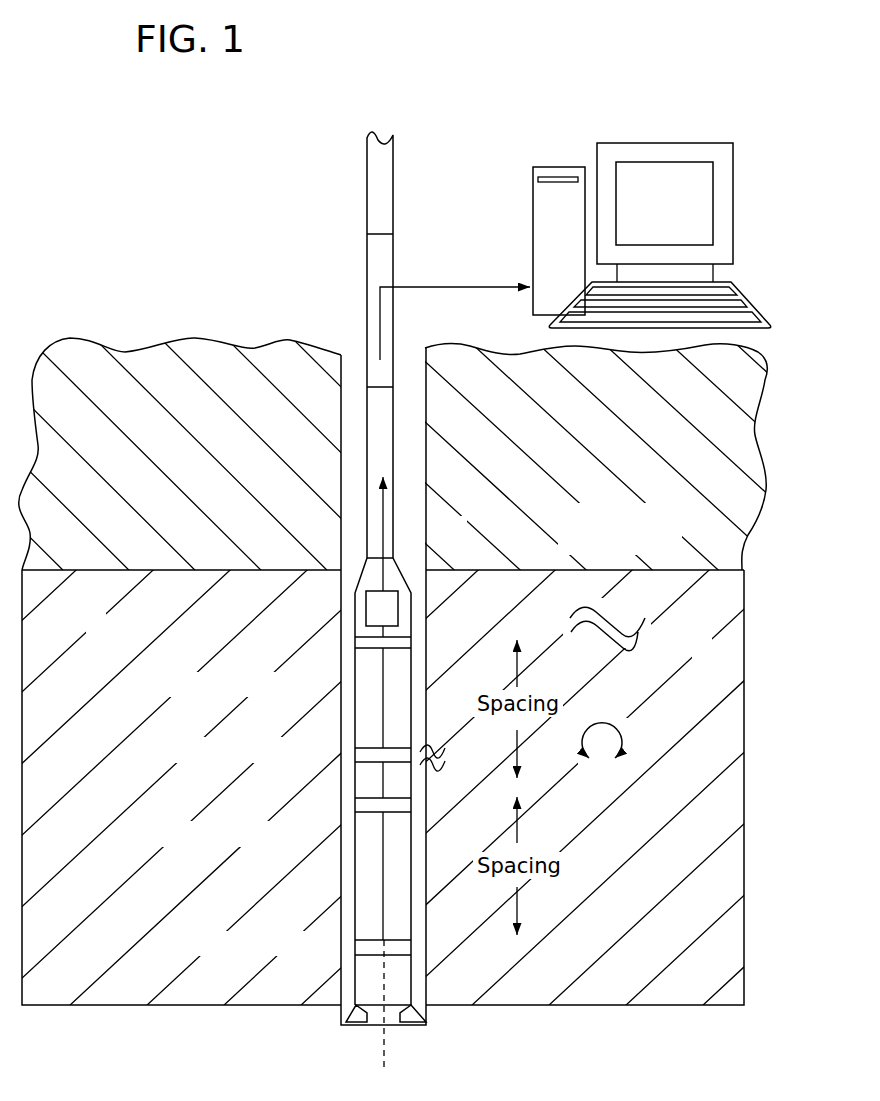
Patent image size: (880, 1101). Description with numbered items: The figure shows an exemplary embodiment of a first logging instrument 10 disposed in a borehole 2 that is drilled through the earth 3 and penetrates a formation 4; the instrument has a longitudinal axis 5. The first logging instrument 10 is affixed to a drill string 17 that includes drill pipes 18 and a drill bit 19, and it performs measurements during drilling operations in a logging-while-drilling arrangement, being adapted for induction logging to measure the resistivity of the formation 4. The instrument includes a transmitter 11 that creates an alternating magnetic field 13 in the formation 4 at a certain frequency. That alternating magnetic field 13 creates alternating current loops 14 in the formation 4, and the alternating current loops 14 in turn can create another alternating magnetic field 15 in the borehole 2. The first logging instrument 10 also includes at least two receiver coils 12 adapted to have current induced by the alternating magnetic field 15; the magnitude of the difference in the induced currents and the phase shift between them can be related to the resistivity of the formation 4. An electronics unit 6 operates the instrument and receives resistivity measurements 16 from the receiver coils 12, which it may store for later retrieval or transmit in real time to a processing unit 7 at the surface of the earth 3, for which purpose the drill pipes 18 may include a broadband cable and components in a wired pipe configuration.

The borehole 2 is at (353, 350).
The earth 3 is at (200, 365).
The formation 4 is at (88, 631).
The longitudinal axis 5 is at (388, 1048).
The electronics unit 6 is at (386, 608).
The processing unit 7 is at (533, 180).
The first logging instrument 10 is at (355, 567).
The transmitter 11 is at (363, 640).
The receiver coils 12 is at (363, 758).
The alternating magnetic field 13 is at (633, 620).
The alternating current loops 14 is at (623, 743).
The alternating magnetic field 15 is at (428, 745).
The resistivity measurements 16 is at (383, 504).
The drill string 17 is at (350, 277).
The drill pipes 18 is at (367, 197).
The drill bit 19 is at (358, 1012).